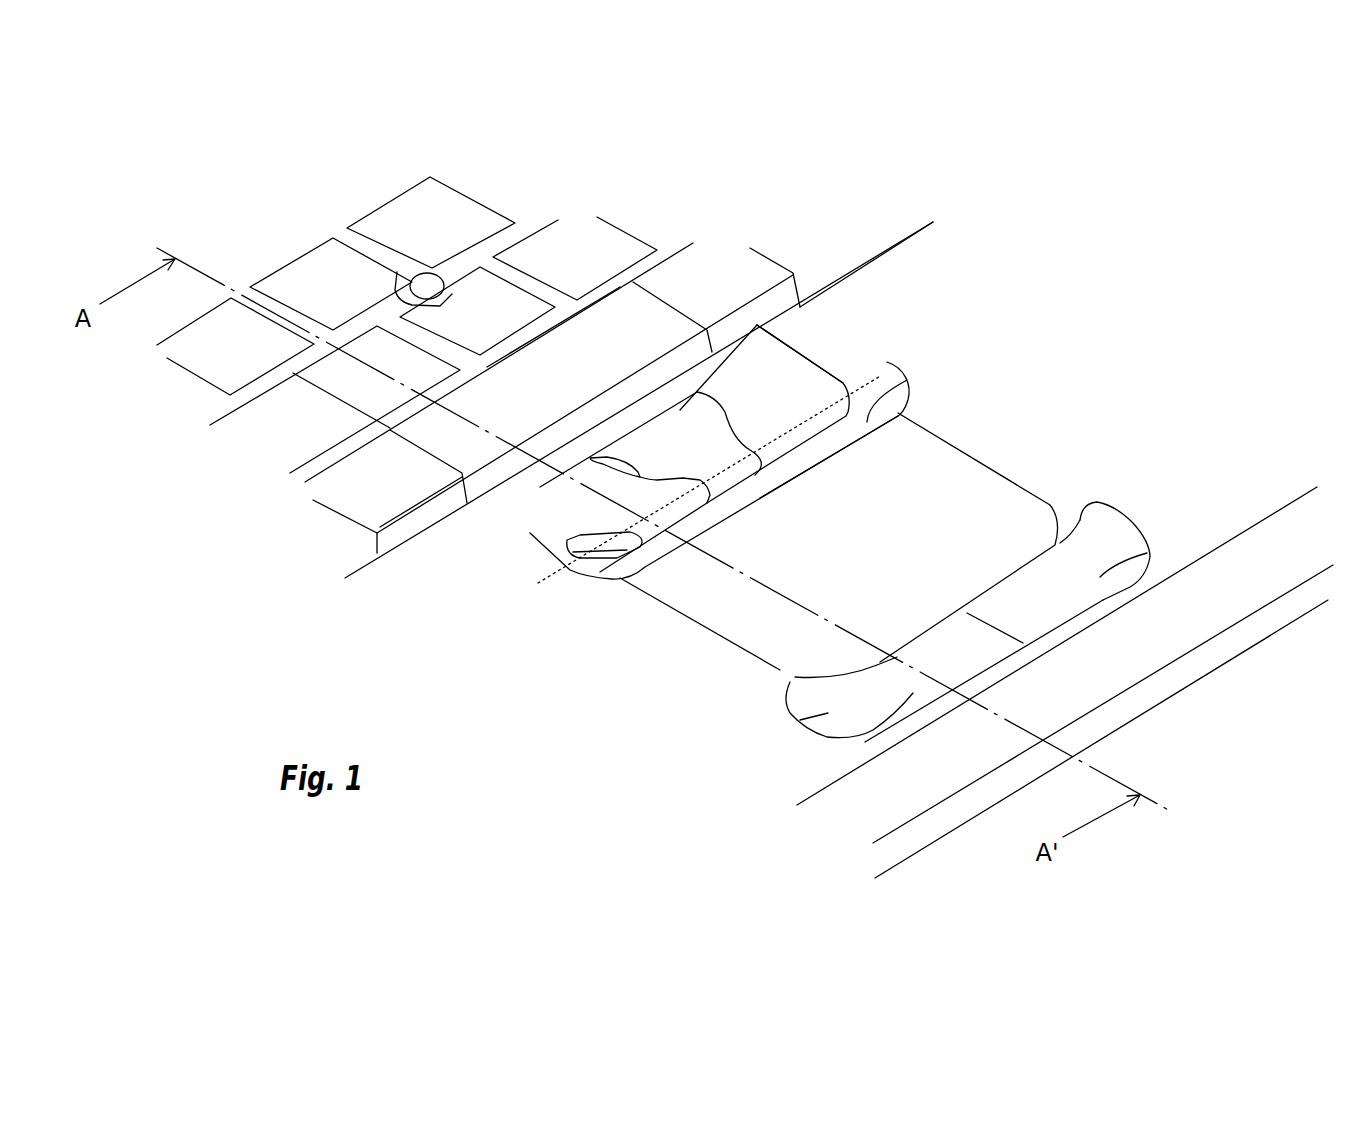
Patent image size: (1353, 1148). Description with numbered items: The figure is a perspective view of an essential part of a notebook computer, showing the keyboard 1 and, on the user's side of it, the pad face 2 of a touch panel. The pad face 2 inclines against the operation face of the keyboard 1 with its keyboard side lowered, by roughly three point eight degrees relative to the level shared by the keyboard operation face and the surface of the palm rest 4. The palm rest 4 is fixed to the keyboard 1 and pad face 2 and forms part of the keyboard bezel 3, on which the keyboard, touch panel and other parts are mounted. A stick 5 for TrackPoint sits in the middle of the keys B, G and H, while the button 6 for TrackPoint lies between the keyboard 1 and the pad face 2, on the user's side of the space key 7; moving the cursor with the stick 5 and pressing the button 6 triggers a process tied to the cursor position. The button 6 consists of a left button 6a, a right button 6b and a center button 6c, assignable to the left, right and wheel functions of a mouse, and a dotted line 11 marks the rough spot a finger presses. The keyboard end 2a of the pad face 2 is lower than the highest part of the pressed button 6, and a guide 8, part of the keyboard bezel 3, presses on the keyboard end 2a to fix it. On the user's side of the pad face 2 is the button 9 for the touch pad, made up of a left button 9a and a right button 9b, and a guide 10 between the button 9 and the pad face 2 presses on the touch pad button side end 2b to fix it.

The keyboard 1 is at (597, 172).
The pad face 2 is at (958, 478).
The keyboard end 2a is at (812, 521).
The touch pad button side end 2b is at (958, 611).
The keyboard bezel 3 is at (1085, 674).
The palm rest 4 is at (1068, 353).
The stick for TrackPoint 5 is at (432, 280).
The button for TrackPoint 6 is at (513, 548).
The left button 6a is at (530, 510).
The right button 6b is at (790, 370).
The center button 6c is at (533, 503).
The space key 7 is at (643, 330).
The guide 8 is at (893, 362).
The button for touch pad 9 is at (1143, 502).
The left button 9a is at (800, 720).
The right button 9b is at (1148, 560).
The guide 10 is at (1062, 543).
The dotted line 11 is at (870, 377).